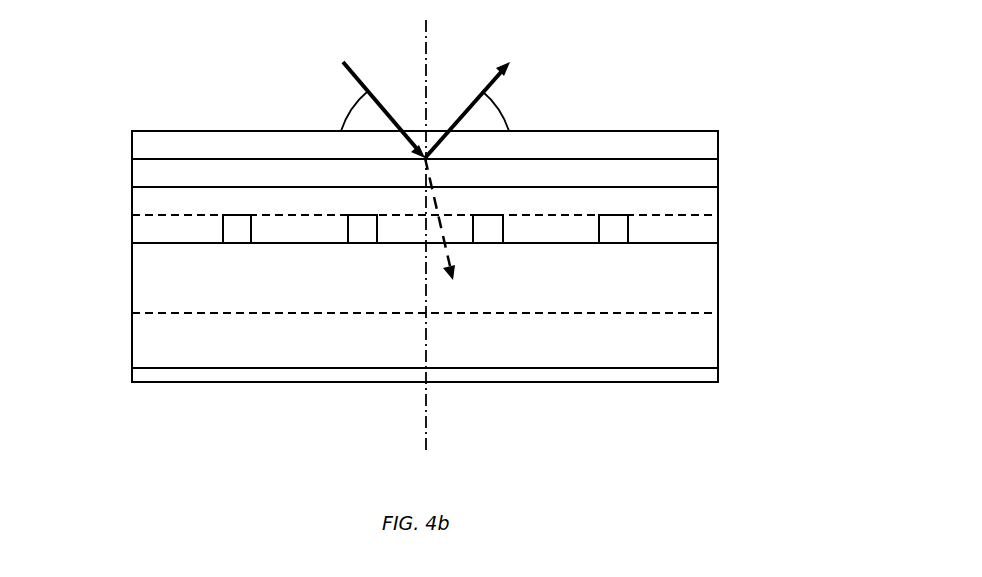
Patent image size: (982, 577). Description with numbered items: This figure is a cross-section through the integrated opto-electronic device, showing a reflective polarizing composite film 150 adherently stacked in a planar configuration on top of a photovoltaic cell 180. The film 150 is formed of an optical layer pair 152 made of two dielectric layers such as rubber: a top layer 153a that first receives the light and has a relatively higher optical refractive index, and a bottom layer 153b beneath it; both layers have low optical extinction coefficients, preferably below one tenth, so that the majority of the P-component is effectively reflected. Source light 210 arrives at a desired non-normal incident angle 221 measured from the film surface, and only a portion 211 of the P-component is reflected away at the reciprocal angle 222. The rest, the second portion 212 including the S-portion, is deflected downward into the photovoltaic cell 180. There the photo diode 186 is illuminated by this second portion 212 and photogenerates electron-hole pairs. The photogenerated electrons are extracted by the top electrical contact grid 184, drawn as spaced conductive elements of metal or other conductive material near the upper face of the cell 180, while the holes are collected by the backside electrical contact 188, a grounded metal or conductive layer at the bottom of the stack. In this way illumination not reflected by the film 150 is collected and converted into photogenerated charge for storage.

The reflective polarizing composite film 150 is at (118, 187).
The optical layer pair 152 is at (388, 168).
The top layer 153a is at (718, 145).
The bottom layer 153b is at (718, 175).
The photovoltaic cell 180 is at (77, 202).
The top electrical contact grid 184 is at (622, 232).
The photo diode 186 is at (132, 243).
The backside electrical contact 188 is at (578, 383).
The source light 210 is at (380, 96).
The reflected portion of P-component 211 is at (480, 96).
The second portion of incident light 212 is at (455, 234).
The non-normal incident angle 221 is at (352, 109).
The reciprocal angle 222 is at (501, 114).